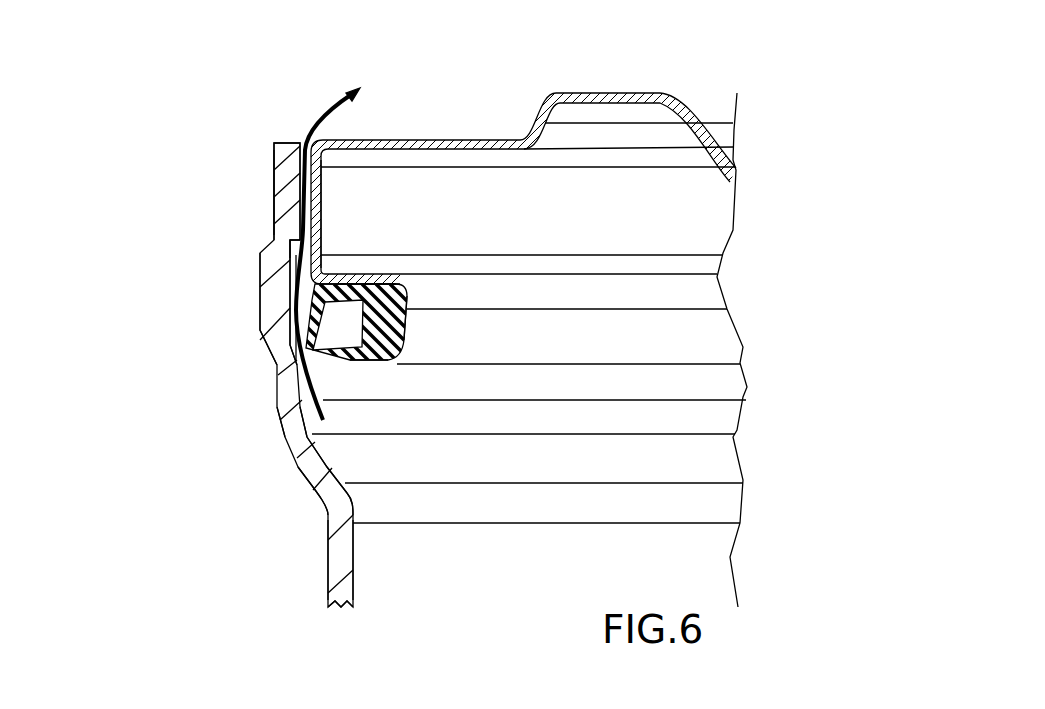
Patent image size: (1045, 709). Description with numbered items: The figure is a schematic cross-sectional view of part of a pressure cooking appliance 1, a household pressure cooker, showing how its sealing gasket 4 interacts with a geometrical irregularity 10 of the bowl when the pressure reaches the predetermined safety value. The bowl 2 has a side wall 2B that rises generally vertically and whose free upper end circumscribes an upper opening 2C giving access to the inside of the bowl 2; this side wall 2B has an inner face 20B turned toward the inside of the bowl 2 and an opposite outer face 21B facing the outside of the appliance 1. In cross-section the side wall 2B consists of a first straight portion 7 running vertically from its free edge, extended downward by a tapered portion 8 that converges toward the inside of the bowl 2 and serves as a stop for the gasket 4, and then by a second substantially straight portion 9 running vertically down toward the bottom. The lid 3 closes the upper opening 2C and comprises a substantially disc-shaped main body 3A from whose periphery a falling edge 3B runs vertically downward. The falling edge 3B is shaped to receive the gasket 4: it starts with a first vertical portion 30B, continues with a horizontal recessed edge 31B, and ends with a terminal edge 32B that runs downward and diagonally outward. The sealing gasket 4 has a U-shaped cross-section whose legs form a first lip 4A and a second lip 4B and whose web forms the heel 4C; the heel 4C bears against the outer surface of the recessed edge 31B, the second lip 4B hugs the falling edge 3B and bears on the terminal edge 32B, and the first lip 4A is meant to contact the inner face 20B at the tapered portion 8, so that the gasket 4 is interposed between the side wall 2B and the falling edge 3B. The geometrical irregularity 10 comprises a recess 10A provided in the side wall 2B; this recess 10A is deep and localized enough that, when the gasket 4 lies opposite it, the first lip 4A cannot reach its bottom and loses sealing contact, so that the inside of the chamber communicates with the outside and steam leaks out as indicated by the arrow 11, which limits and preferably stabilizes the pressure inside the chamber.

The pressure cooking appliance 1 is at (190, 331).
The bowl 2 is at (323, 550).
The side wall 2B is at (343, 557).
The upper opening 2C is at (303, 130).
The lid 3 is at (624, 86).
The main body 3A is at (478, 140).
The falling edge 3B is at (317, 220).
The sealing gasket 4 is at (383, 284).
The first lip 4A is at (315, 317).
The second lip 4B is at (404, 330).
The heel 4C is at (376, 280).
The first straight portion 7 is at (288, 172).
The tapered portion 8 is at (310, 470).
The second substantially straight portion 9 is at (343, 593).
The geometrical irregularity 10 is at (268, 332).
The recess 10A is at (290, 255).
The arrow 11 is at (305, 392).
The inner face 20B is at (353, 515).
The outer face 21B is at (272, 197).
The first vertical portion 30B is at (323, 182).
The horizontal recessed edge 31B is at (349, 271).
The terminal edge 32B is at (397, 348).